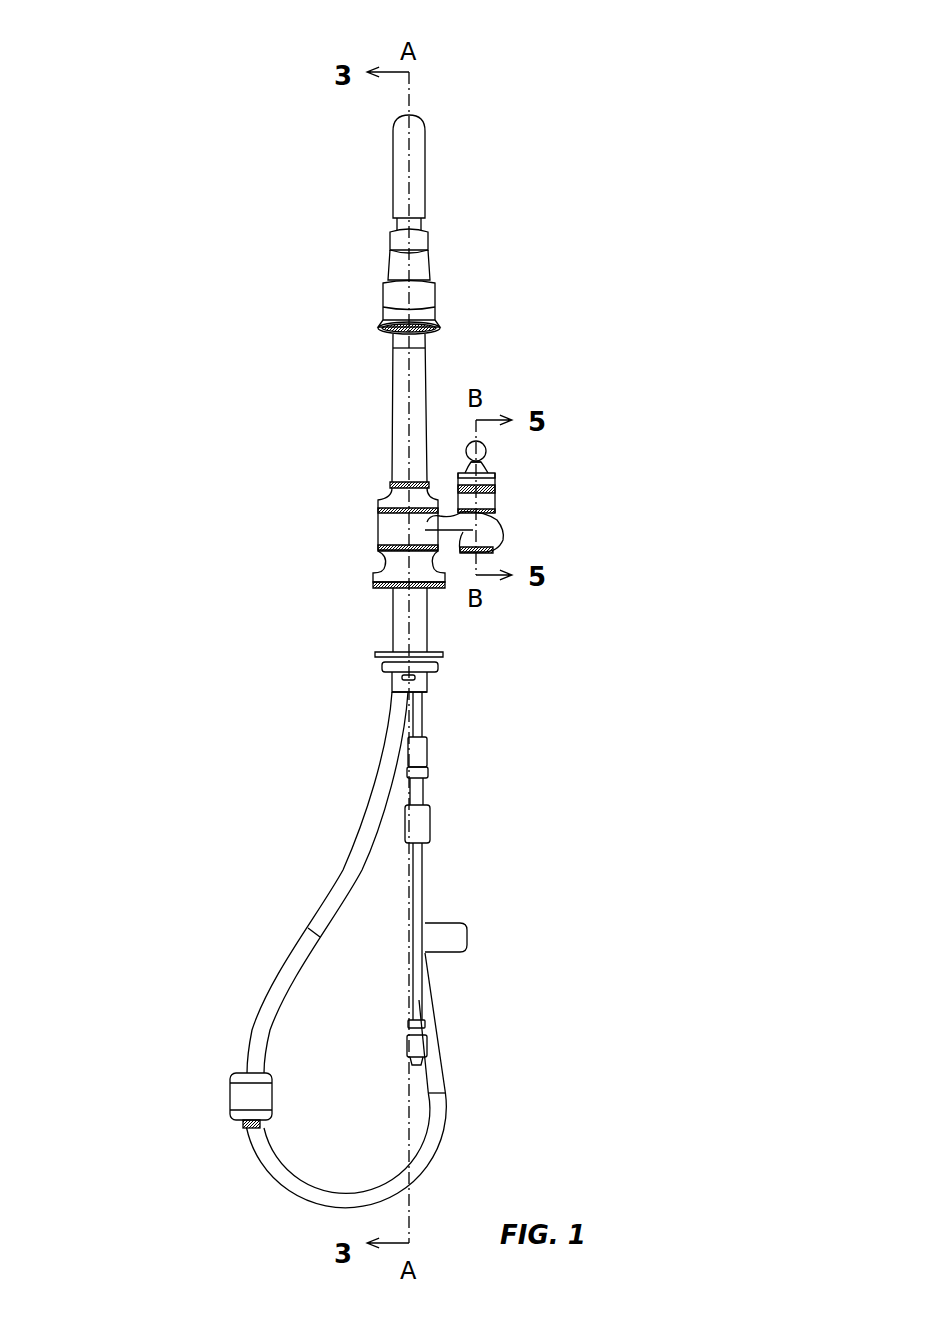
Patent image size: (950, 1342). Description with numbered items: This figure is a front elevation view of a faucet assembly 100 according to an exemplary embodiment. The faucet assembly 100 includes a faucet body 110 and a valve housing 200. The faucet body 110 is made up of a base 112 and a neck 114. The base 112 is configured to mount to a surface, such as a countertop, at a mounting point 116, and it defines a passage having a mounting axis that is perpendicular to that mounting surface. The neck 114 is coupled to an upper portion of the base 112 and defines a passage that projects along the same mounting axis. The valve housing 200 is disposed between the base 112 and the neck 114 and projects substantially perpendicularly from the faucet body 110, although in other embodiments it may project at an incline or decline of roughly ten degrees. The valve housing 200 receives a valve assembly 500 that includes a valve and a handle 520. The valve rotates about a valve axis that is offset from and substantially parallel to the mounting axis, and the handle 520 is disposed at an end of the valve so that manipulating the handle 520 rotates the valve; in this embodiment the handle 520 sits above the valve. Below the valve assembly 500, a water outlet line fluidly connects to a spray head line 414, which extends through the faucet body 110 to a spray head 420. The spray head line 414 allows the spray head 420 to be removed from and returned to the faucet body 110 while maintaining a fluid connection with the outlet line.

The faucet assembly 100 is at (151, 169).
The faucet body 110 is at (349, 444).
The base 112 is at (393, 560).
The neck 114 is at (418, 400).
The mounting point 116 is at (410, 588).
The valve housing 200 is at (521, 527).
The spray head line 414 is at (340, 890).
The spray head 420 is at (424, 300).
The valve assembly 500 is at (512, 481).
The handle 520 is at (487, 451).